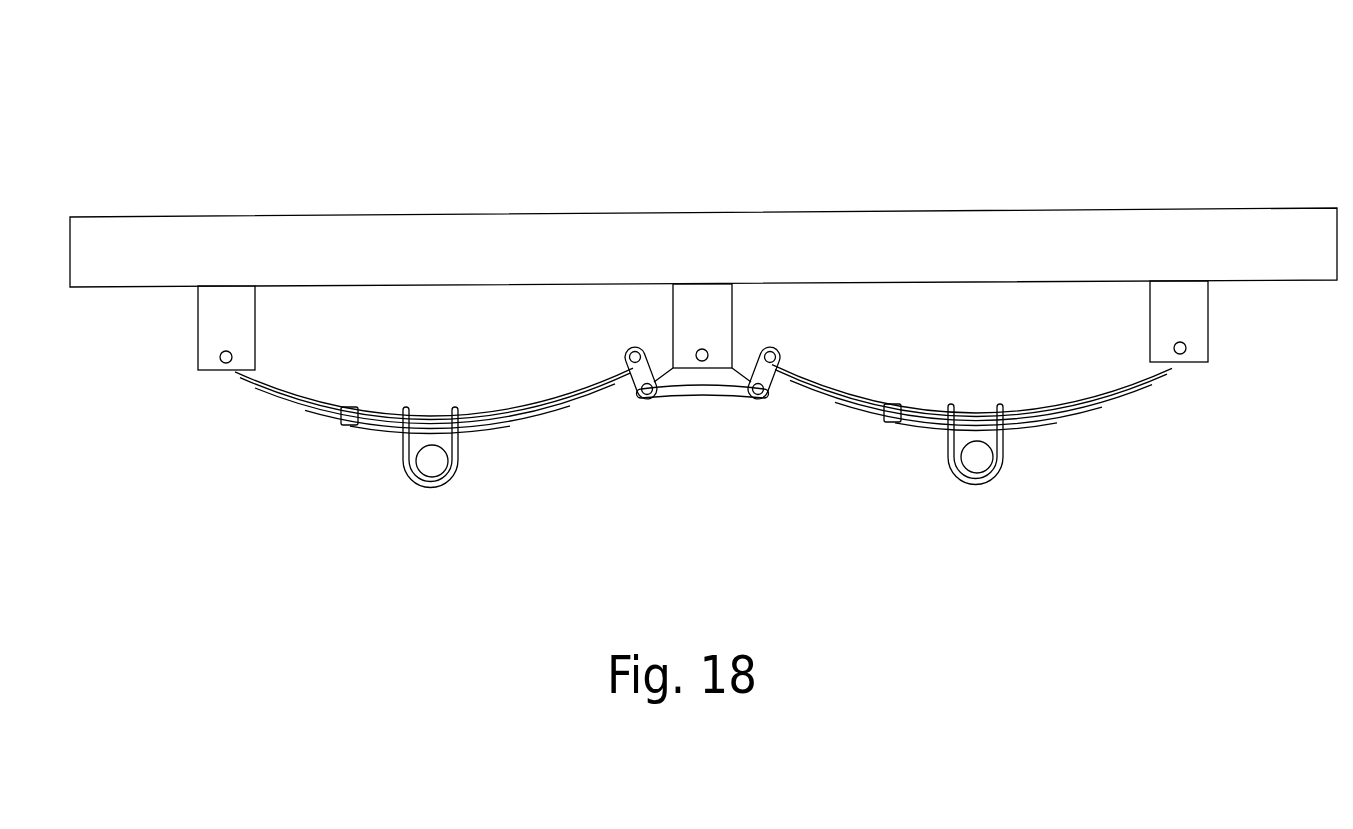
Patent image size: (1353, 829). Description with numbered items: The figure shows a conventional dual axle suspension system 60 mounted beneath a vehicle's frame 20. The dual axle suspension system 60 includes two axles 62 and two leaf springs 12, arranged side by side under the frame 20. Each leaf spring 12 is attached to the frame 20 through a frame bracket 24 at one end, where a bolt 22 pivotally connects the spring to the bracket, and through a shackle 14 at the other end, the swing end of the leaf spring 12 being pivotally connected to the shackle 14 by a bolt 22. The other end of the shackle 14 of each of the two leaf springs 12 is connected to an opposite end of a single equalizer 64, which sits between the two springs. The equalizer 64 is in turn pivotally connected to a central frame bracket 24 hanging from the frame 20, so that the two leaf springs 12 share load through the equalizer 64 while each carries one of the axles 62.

The dual axle suspension system 60 is at (440, 170).
The frame 20 is at (888, 240).
The frame bracket 24 is at (228, 315).
The bolt 22 is at (222, 362).
The shackle 14 is at (632, 373).
The equalizer 64 is at (708, 393).
The leaf spring 12 is at (497, 430).
The axle 62 is at (433, 463).